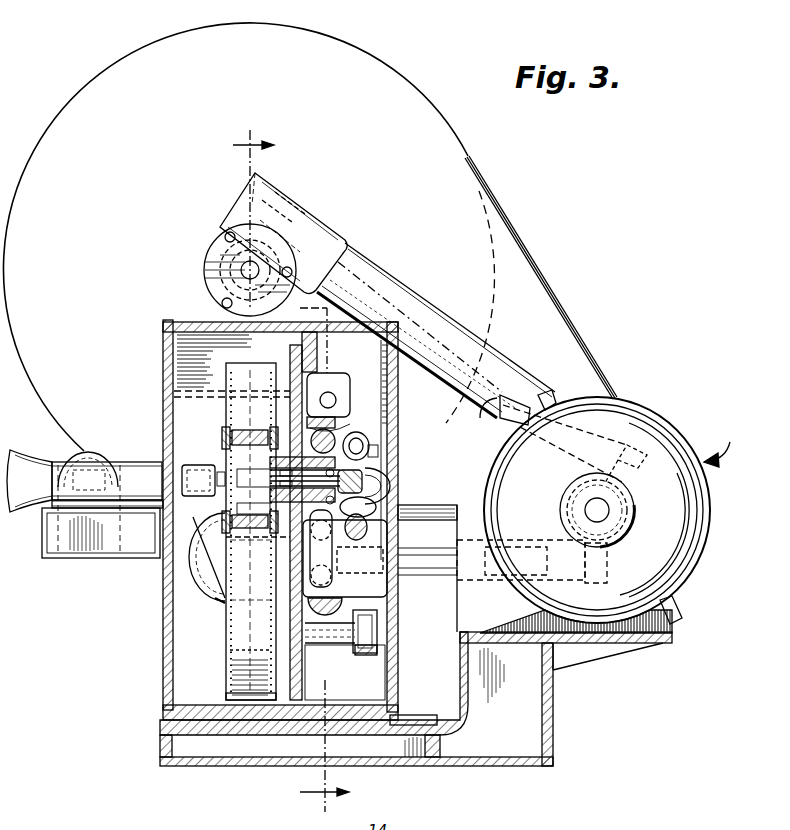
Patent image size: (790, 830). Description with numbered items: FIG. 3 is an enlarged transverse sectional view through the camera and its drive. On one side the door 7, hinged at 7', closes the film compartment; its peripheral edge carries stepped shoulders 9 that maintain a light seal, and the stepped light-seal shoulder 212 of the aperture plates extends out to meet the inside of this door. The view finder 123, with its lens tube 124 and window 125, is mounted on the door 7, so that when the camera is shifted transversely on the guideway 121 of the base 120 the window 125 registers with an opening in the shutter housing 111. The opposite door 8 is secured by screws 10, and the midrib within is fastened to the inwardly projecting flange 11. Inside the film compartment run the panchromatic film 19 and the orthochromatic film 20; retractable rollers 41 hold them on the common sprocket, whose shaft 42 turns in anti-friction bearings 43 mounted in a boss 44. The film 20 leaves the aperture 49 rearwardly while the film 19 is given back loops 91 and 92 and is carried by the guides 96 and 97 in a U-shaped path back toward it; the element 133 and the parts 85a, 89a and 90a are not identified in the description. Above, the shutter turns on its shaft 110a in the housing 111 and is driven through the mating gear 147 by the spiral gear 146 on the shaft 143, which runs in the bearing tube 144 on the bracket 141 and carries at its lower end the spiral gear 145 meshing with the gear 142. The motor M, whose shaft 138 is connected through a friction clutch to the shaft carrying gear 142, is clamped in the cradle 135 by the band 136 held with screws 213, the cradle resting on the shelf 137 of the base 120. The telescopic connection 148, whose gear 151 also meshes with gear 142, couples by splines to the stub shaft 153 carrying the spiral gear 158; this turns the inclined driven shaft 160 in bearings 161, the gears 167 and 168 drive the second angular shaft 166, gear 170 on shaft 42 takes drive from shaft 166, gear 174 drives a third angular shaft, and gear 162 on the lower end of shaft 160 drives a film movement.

The shutter housing 111 is at (406, 80).
The bracket 141 is at (599, 345).
The screws 10 is at (285, 471).
The shutter shaft 110a is at (236, 282).
The mating gear 147 is at (232, 262).
The spiral gear 146 is at (292, 217).
The tubular bearing tube 144 is at (426, 318).
The shutter drive shaft 143 is at (512, 380).
The door 7 is at (258, 521).
The stepped shoulders 9 is at (165, 326).
The door 8 is at (398, 392).
The hinge 7' is at (287, 683).
The camera base 120 is at (163, 735).
The base bottom plate 133 is at (182, 767).
The cradle 135 is at (564, 635).
The shelf 137 is at (622, 650).
The guideway 121 is at (414, 715).
The stepped shoulder 212 is at (174, 392).
The flange 11 is at (300, 343).
The Orthochromatic film 20 is at (242, 388).
The Panchromatic film 19 is at (248, 428).
The retractable rollers 41 is at (223, 430).
The aperture 49 is at (246, 470).
The film guide 96 is at (226, 657).
The film guide 97 is at (230, 697).
The stub shaft 153 is at (276, 538).
The anti-friction bearings 43 is at (270, 484).
The shaft 42 is at (272, 503).
The driven shaft 160 is at (338, 392).
The bearings 161 is at (334, 388).
The spiral gear 167 is at (336, 406).
The spiral gear 168 is at (336, 436).
The boss 44 is at (370, 442).
The spiral gear 170 is at (362, 474).
The spiral gear 174 is at (385, 486).
The second angularly disposed shaft 166 is at (368, 524).
The spiral gear 158 is at (333, 556).
The spiral gear 162 is at (310, 607).
The switch 90a is at (378, 631).
The lower shaft housing 85a is at (338, 645).
The clamp 89a is at (374, 657).
The telescopic connection 148 is at (428, 562).
The window 125 is at (205, 477).
The back loop 91 is at (216, 540).
The back loop 92 is at (222, 607).
The view finder 123 is at (124, 460).
The lens tube 124 is at (140, 462).
The band 136 is at (654, 413).
The motor shaft 138 is at (590, 512).
The spiral gear 142 is at (612, 515).
The spiral gear 145 is at (630, 466).
The spiral gear 151 is at (606, 572).
The motor M is at (717, 446).
The screws 213 is at (168, 565).